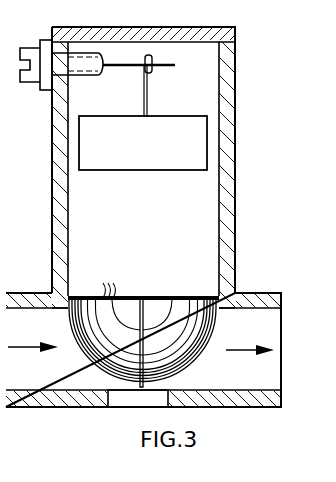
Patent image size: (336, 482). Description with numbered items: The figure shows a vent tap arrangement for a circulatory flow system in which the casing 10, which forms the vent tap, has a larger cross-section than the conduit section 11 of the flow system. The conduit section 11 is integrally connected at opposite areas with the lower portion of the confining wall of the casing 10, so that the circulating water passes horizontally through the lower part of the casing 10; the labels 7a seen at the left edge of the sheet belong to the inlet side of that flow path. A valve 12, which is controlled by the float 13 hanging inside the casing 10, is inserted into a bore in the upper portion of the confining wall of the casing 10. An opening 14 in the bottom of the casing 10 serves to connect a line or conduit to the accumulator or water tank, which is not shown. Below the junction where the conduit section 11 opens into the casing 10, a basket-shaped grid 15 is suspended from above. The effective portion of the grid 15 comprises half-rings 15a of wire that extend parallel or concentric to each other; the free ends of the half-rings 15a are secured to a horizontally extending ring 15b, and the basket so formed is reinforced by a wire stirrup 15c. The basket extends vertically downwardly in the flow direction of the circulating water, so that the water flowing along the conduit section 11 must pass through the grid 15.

The inlet conduit 7a is at (7, 170).
The casing 10 is at (232, 201).
The conduit section 11 is at (32, 293).
The valve 12 is at (86, 67).
The float 13 is at (150, 152).
The opening 14 is at (128, 401).
The basket-shaped grid 15 is at (91, 361).
The half-rings 15a is at (114, 294).
The horizontally extending ring 15b is at (150, 296).
The wire stirrup 15c is at (168, 296).